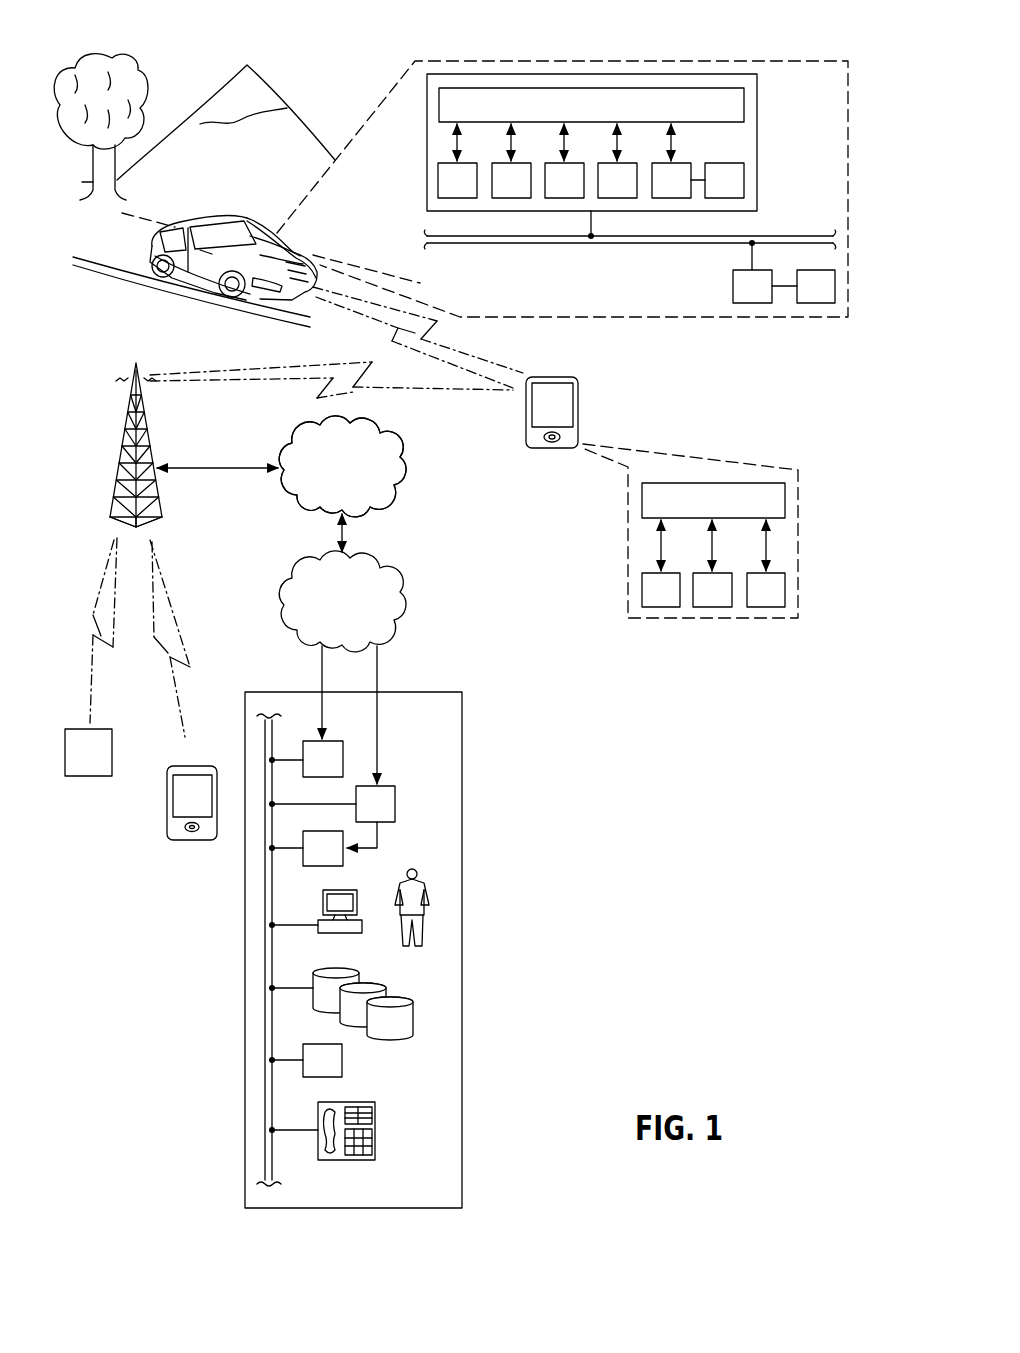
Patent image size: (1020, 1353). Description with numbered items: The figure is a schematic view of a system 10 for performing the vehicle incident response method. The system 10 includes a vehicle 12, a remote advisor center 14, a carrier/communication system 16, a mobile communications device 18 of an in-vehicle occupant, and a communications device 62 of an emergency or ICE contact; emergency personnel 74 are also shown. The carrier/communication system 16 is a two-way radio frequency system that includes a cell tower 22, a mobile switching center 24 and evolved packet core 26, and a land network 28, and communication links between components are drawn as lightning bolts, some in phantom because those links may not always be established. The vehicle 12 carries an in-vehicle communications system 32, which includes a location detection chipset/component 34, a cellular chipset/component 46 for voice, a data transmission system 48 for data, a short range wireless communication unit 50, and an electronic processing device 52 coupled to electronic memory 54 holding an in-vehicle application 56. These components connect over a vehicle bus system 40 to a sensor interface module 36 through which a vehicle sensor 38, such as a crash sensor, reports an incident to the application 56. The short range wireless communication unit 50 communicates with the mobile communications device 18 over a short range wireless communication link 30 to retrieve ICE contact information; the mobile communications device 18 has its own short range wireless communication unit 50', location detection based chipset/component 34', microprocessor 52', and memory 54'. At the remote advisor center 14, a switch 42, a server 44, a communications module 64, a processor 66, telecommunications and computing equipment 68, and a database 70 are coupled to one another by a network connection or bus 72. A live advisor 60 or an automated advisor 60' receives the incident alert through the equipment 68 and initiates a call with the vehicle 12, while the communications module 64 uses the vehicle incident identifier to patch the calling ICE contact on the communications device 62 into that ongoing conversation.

The system 10 is at (712, 779).
The vehicle 12 is at (224, 222).
The remote advisor center 14 is at (462, 1138).
The carrier/communication system 16 is at (106, 452).
The mobile communications device 18 is at (579, 405).
The cell tower 22 is at (150, 523).
The mobile switching center 24 is at (367, 478).
The evolved packet core 26 is at (342, 466).
The land network 28 is at (335, 610).
The short range wireless communication link 30 is at (482, 335).
The in-vehicle communications system 32 is at (420, 165).
The location detection chipset/component 34 is at (457, 161).
The sensor interface module 36 is at (745, 298).
The vehicle sensor 38 is at (809, 298).
The vehicle bus system 40 is at (774, 236).
The switch 42 is at (316, 772).
The server 44 is at (316, 862).
The cellular chipset/component 46 is at (504, 190).
The data transmission system 48 is at (557, 190).
The short range wireless communication unit 50 is at (617, 161).
The electronic processing device 52 is at (591, 105).
The electronic memory 54 is at (671, 161).
The in-vehicle application 56 is at (717, 190).
The live advisor 60 is at (419, 864).
The automated advisor 60' is at (359, 921).
The communications device 62 is at (188, 841).
The communications module 64 is at (369, 817).
The processor 66 is at (315, 1074).
The telecommunications and computing equipment 68 is at (375, 1130).
The database 70 is at (413, 1013).
The network connection or bus 72 is at (273, 1170).
The emergency personnel 74 is at (81, 760).
The location detection based chipset/component 34' is at (661, 563).
The short range wireless communication unit 50' is at (712, 563).
The microprocessor 52' is at (713, 500).
The memory 54' is at (766, 563).